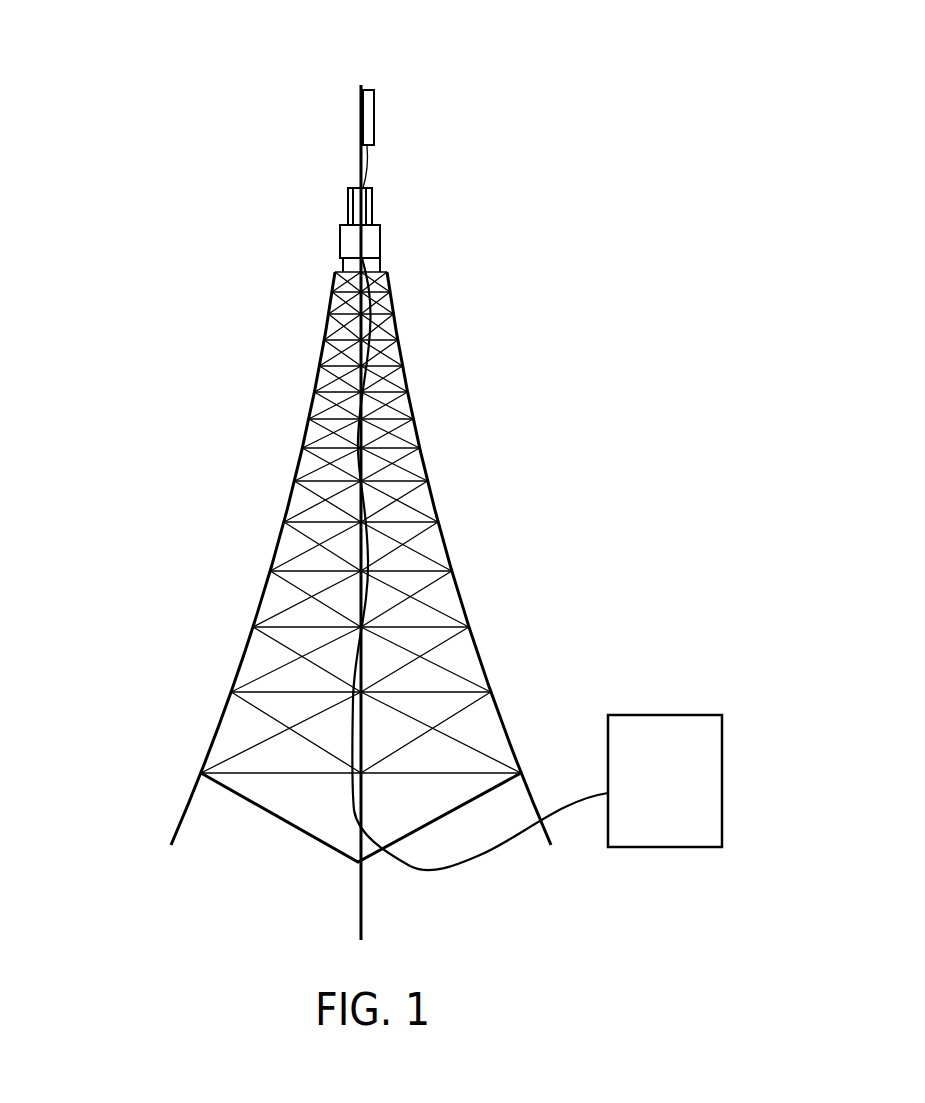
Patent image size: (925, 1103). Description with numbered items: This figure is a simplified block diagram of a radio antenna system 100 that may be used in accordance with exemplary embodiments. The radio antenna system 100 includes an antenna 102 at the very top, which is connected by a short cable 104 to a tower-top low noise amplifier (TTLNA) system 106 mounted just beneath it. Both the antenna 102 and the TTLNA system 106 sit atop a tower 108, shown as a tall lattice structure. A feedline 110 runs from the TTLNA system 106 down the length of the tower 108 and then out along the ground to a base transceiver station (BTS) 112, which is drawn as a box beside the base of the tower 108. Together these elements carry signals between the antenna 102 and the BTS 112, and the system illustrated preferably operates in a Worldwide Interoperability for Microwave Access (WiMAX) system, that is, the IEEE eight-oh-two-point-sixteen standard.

The radio antenna system 100 is at (172, 157).
The antenna 102 is at (375, 117).
The cable 104 is at (368, 170).
The tower-top low noise amplifier (TTLNA) system 106 is at (380, 240).
The tower 108 is at (408, 403).
The feedline 110 is at (443, 872).
The base transceiver station (BTS) 112 is at (723, 778).